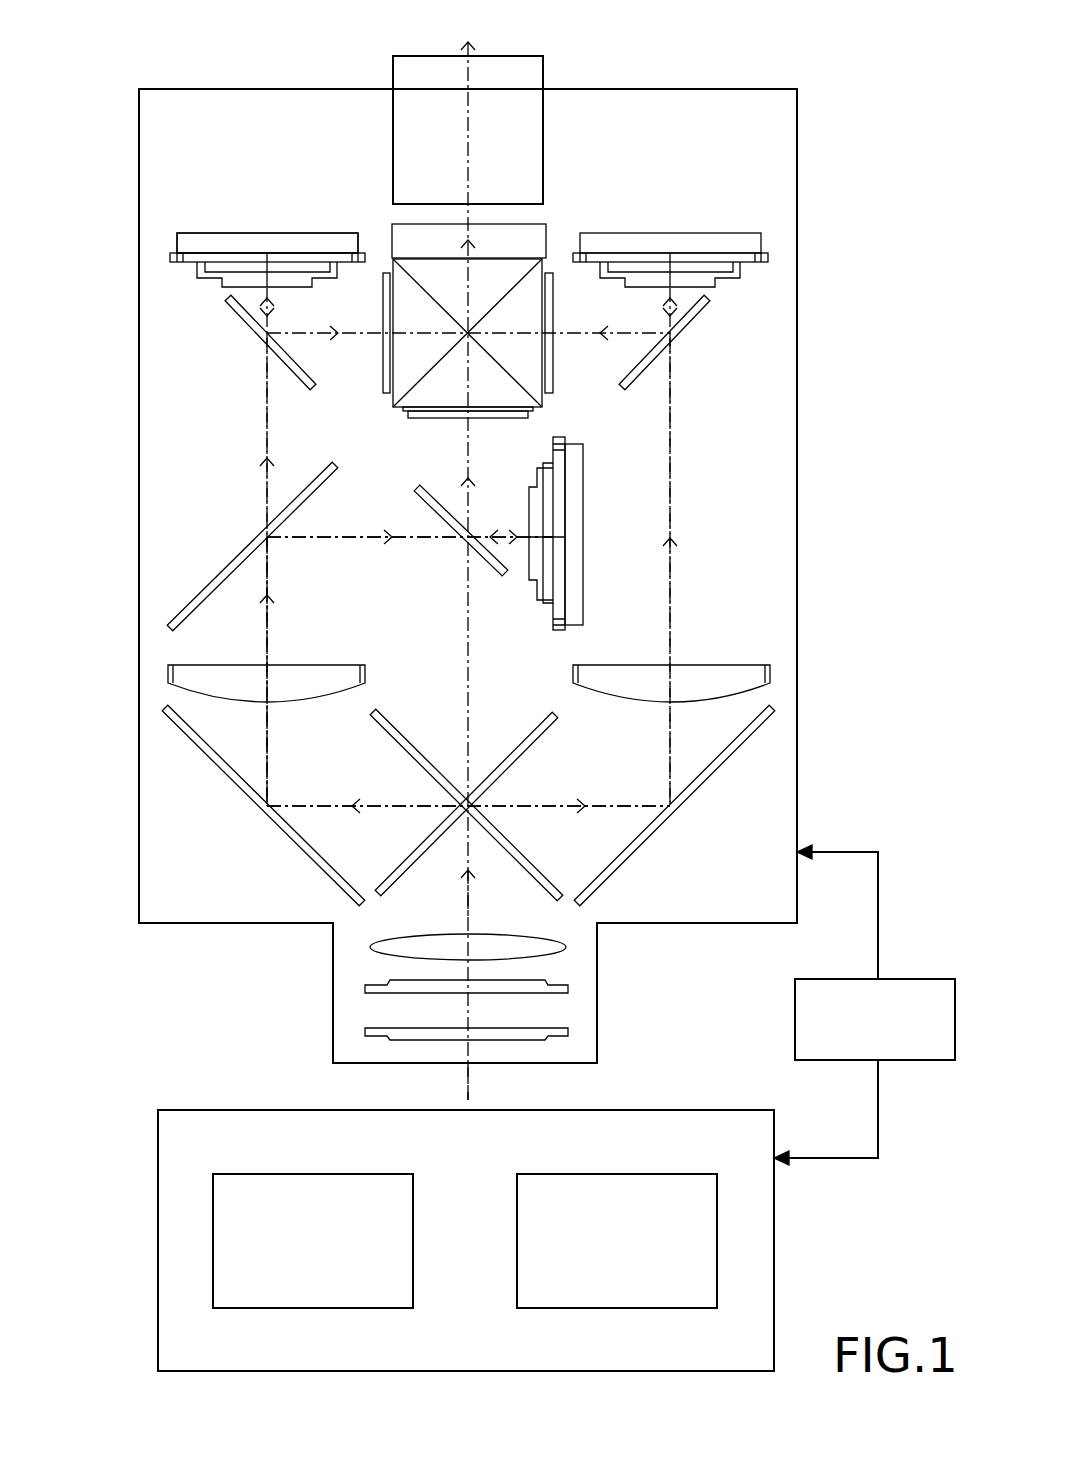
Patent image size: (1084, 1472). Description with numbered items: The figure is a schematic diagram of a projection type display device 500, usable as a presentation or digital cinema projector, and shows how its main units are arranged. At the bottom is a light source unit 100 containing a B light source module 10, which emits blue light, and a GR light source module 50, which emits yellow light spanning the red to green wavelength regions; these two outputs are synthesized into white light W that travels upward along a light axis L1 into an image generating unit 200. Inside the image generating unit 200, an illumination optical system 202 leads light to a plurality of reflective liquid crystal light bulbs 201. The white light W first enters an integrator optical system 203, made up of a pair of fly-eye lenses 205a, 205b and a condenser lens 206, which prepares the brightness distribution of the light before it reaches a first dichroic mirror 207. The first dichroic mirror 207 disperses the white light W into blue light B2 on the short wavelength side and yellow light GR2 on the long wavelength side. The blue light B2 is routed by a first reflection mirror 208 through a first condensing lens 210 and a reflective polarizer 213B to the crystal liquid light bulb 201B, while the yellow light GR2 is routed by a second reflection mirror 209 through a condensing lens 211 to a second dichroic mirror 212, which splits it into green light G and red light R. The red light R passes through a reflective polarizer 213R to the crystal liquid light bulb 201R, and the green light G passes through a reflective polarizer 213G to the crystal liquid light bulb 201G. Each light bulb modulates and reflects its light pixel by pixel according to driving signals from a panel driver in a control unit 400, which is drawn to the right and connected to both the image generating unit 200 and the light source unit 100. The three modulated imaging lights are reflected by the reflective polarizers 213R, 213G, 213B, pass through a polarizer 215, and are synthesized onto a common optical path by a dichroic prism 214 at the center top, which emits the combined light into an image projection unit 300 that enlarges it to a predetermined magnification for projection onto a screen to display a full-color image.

The projection type display device 500 is at (318, 86).
The image projection unit 300 is at (543, 128).
The image generating unit 200 is at (692, 437).
The reflective liquid crystal light bulb 201 is at (270, 232).
The crystal liquid light bulb 201R is at (267, 243).
The crystal liquid light bulb 201G is at (530, 490).
The crystal liquid light bulb 201B is at (720, 232).
The dichroic prism 214 is at (548, 236).
The polarizer 215 is at (383, 390).
The reflective polarizer 213R is at (240, 318).
The reflective polarizer 213G is at (438, 490).
The reflective polarizer 213B is at (698, 320).
The second dichroic mirror 212 is at (212, 590).
The condensing lens 211 is at (252, 665).
The first condensing lens 210 is at (744, 665).
The second reflection mirror 209 is at (284, 832).
The first reflection mirror 208 is at (652, 832).
The first dichroic mirror 207 is at (536, 864).
The integrator optical system 203 is at (245, 930).
The condenser lens 206 is at (370, 947).
The fly-eye lens 205b is at (366, 988).
The fly-eye lens 205a is at (366, 1033).
The illumination optical system 202 is at (195, 767).
The control unit 400 is at (795, 1018).
The light source unit 100 is at (158, 1143).
The GR light source module 50 is at (213, 1222).
The B light source module 10 is at (717, 1224).
The red light R is at (262, 410).
The green light G is at (318, 540).
The blue light B2 is at (672, 497).
The yellow light GR2 is at (268, 755).
The white light W is at (470, 905).
The light axis L1 is at (470, 1088).